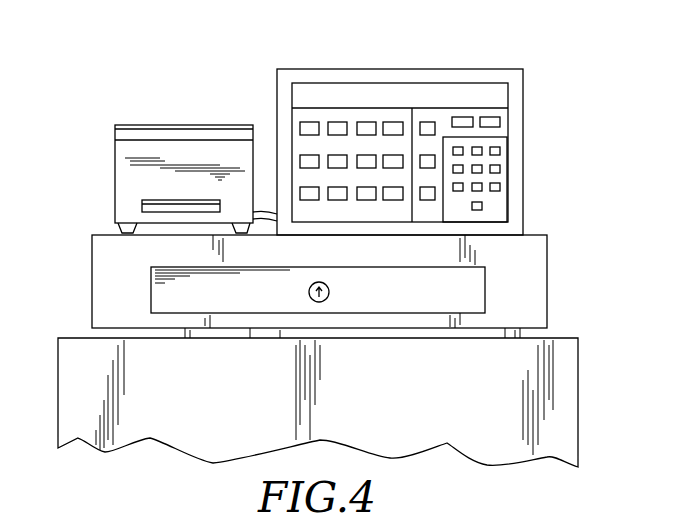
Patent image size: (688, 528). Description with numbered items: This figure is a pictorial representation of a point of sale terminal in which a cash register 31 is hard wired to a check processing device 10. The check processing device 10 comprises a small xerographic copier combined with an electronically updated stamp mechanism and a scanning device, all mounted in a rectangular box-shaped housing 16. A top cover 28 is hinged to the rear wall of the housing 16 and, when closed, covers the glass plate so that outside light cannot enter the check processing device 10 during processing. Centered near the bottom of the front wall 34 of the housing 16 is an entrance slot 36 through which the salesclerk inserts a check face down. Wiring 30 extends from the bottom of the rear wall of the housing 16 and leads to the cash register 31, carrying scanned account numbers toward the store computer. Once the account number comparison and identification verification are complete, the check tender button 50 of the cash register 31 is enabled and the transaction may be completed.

The check processing device 10 is at (93, 105).
The housing 16 is at (152, 159).
The top cover 28 is at (139, 127).
The wiring 30 is at (268, 210).
The cash register 31 is at (444, 130).
The front wall 34 is at (132, 195).
The entrance slot 36 is at (173, 203).
The check tender button 50 is at (433, 126).